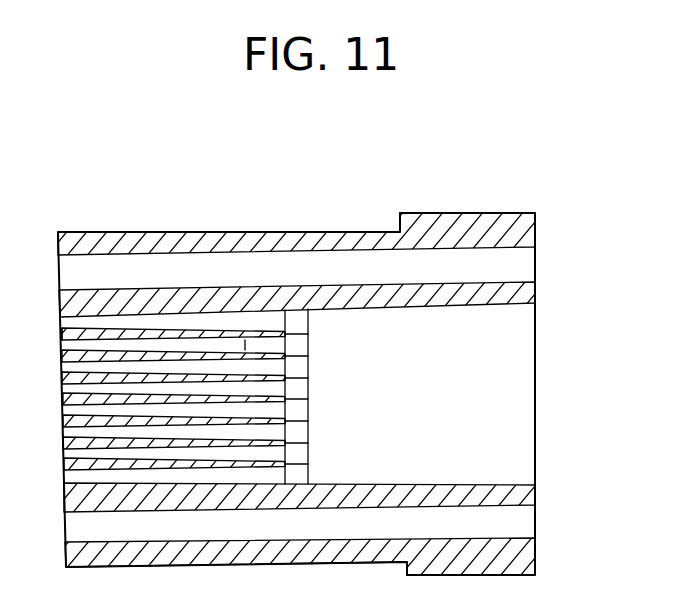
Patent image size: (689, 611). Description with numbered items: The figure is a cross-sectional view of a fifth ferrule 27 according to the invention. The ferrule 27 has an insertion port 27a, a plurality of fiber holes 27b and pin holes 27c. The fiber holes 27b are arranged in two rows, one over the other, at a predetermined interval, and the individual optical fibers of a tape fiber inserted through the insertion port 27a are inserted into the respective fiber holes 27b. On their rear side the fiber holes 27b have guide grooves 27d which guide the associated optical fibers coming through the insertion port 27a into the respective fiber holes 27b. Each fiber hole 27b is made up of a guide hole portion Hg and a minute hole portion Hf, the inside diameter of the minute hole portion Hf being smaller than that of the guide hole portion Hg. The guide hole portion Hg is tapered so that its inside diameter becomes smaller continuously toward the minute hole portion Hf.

The ferrule 27 is at (339, 347).
The insertion port 27a is at (500, 398).
The fiber holes 27b is at (258, 185).
The pin holes 27c is at (505, 276).
The guide grooves 27d is at (308, 358).
The minute hole portion Hf is at (126, 320).
The guide hole portion Hg is at (246, 320).